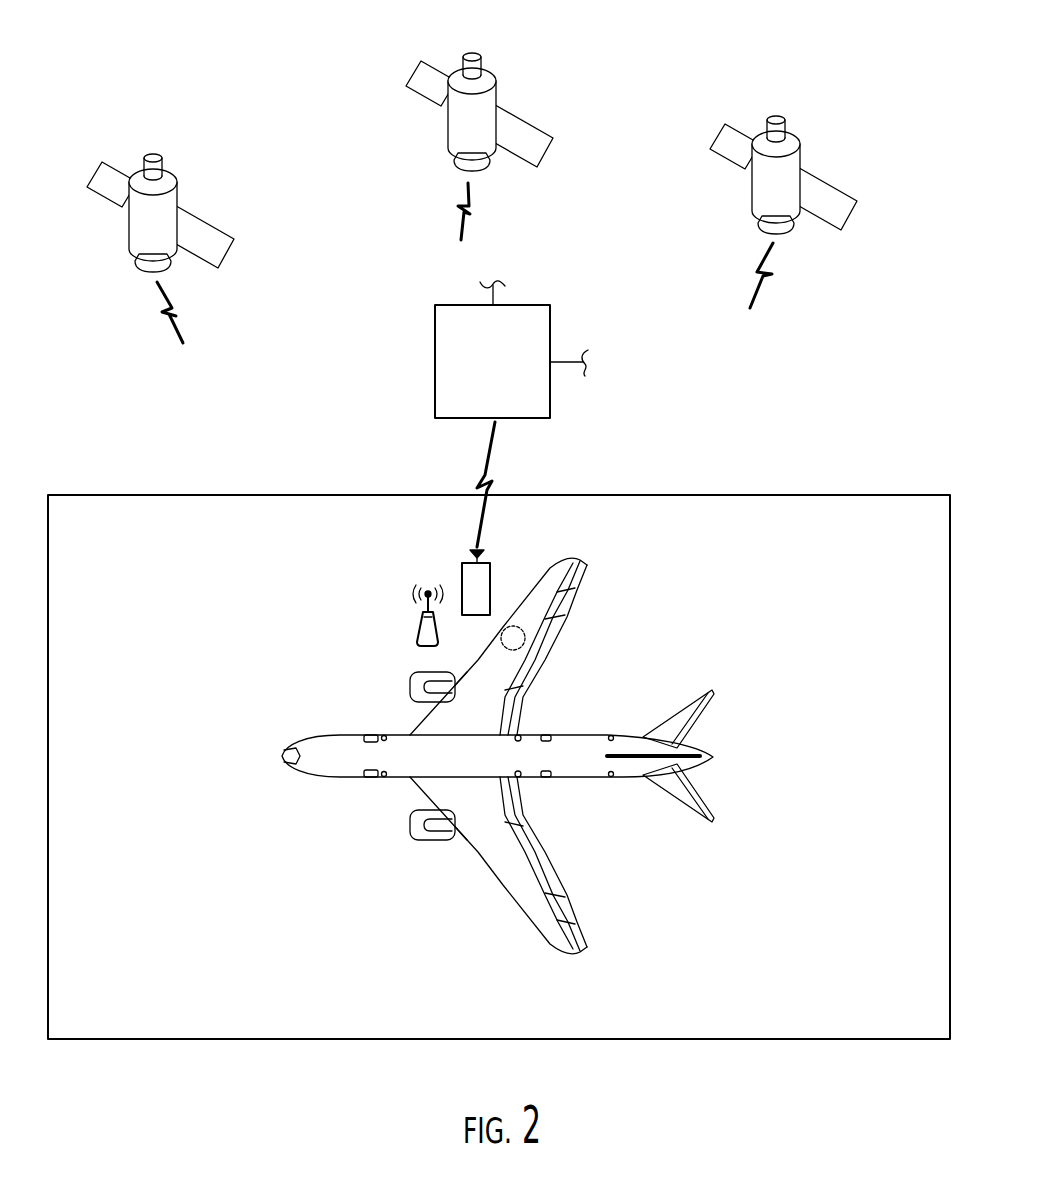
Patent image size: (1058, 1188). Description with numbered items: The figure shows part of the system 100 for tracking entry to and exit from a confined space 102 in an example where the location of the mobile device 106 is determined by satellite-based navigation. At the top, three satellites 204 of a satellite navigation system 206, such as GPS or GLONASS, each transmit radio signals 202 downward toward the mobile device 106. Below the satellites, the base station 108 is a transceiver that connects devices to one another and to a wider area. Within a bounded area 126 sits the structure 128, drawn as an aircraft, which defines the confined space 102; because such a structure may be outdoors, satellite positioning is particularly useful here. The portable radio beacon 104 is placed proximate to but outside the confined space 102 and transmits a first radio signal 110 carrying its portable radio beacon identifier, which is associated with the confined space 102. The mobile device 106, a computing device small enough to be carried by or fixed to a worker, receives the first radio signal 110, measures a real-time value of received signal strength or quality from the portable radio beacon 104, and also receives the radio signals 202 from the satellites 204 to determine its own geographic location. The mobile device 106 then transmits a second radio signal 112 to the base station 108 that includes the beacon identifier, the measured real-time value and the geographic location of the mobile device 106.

The system 100 is at (256, 40).
The confined space 102 is at (545, 649).
The portable radio beacon 104 is at (402, 626).
The mobile device 106 is at (497, 577).
The base station 108 is at (487, 349).
The first radio signal 110 is at (422, 585).
The second radio signal 112 is at (463, 484).
The area 126 is at (535, 1028).
The structure 128 is at (498, 756).
The radio signals 202 is at (466, 263).
The satellites 204 is at (481, 162).
The satellite navigation system 206 is at (635, 66).